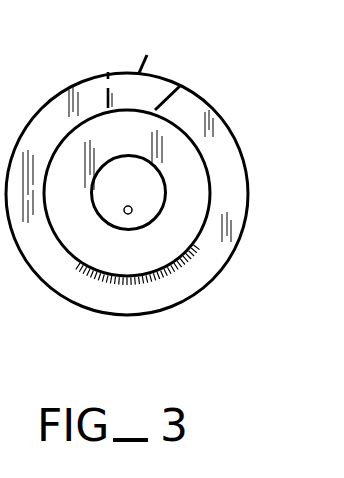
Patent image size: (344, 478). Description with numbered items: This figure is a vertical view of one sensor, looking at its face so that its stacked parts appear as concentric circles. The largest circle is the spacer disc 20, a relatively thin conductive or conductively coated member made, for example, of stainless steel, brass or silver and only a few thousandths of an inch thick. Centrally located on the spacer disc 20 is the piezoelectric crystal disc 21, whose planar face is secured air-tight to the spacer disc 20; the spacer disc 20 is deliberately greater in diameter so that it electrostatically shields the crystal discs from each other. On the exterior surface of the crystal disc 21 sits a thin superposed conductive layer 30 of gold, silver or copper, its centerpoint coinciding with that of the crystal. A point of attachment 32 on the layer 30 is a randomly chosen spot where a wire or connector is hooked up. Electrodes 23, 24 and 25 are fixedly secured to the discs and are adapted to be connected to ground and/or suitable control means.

The spacer disc 20 is at (203, 266).
The piezoelectric crystal disc 21 is at (198, 200).
The electrode 23 is at (147, 55).
The electrode 24 is at (181, 85).
The electrode 25 is at (107, 72).
The superposed conductive layer 30 is at (139, 188).
The point of attachment 32 is at (131, 214).